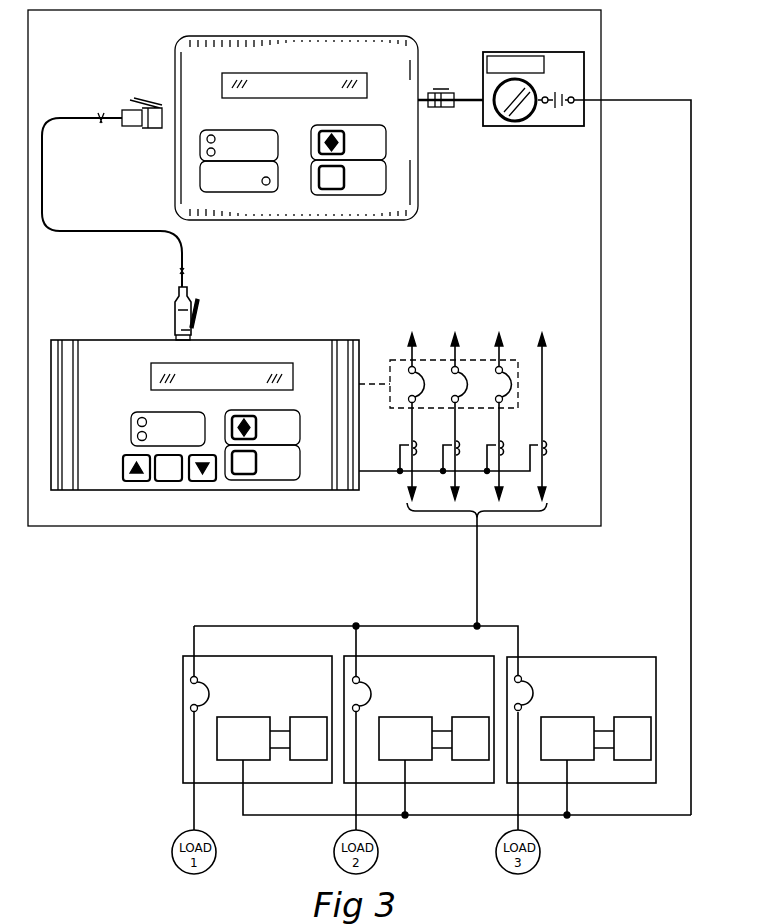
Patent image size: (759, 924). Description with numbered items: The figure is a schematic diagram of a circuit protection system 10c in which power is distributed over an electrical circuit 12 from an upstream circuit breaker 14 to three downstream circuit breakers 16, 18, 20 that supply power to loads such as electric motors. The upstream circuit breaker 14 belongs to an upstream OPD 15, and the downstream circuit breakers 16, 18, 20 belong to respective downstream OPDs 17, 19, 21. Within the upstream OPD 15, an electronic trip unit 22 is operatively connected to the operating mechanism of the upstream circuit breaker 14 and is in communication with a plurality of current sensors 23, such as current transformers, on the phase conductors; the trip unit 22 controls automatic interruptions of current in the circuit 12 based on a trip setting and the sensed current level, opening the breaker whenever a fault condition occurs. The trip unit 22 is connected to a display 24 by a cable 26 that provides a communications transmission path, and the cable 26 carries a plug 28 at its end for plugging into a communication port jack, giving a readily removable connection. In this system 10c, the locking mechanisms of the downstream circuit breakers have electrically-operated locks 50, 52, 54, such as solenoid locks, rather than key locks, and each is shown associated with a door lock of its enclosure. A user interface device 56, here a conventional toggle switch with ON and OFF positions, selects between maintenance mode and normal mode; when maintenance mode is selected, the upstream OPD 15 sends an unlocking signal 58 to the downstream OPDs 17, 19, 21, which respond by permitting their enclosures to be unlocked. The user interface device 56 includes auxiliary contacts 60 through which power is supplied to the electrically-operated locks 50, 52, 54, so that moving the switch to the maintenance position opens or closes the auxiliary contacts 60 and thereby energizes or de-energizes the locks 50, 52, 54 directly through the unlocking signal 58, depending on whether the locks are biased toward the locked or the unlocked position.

The circuit protection system 10c is at (119, 651).
The electrical circuit 12 is at (478, 570).
The upstream circuit breaker 14 is at (393, 361).
The upstream OPD 15 is at (255, 527).
The downstream circuit breaker 16 is at (206, 690).
The downstream OPD 17 is at (281, 784).
The downstream circuit breaker 18 is at (368, 690).
The downstream OPD 19 is at (443, 784).
The downstream circuit breaker 20 is at (530, 690).
The downstream OPD 21 is at (603, 784).
The electronic trip unit 22 is at (95, 491).
The current sensors 23 is at (408, 443).
The display 24 is at (330, 221).
The cable 26 is at (184, 255).
The plug 28 is at (199, 316).
The electrically-operated lock 50 is at (245, 716).
The electrically-operated lock 52 is at (407, 716).
The electrically-operated lock 54 is at (569, 716).
The user interface device 56 is at (515, 121).
The unlocking signal 58 is at (692, 448).
The auxiliary contacts 60 is at (558, 92).